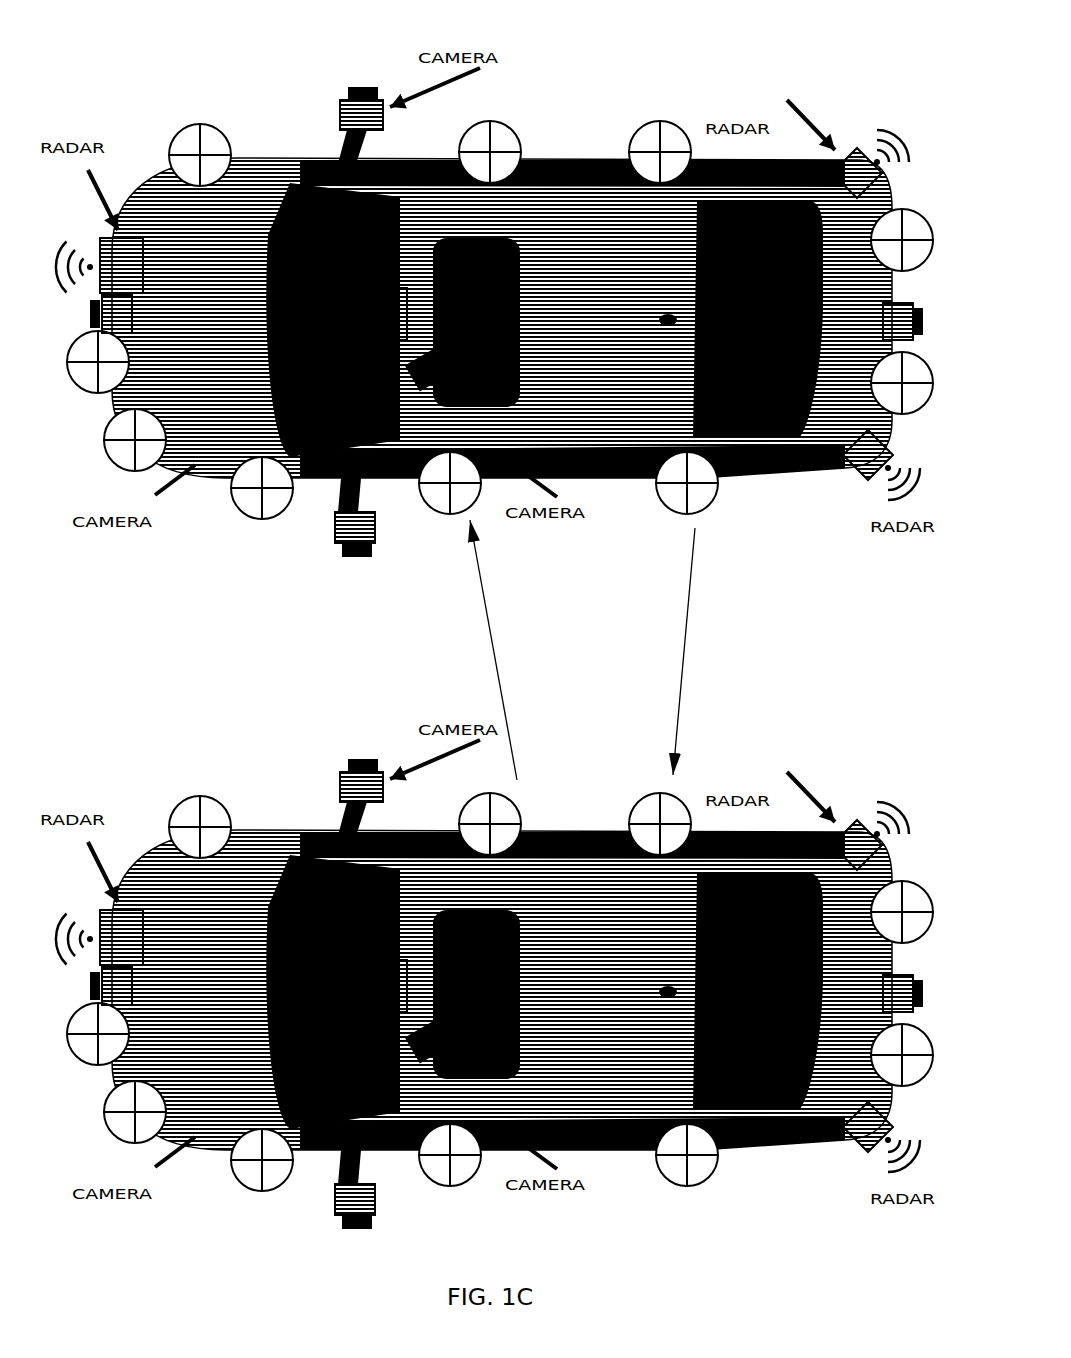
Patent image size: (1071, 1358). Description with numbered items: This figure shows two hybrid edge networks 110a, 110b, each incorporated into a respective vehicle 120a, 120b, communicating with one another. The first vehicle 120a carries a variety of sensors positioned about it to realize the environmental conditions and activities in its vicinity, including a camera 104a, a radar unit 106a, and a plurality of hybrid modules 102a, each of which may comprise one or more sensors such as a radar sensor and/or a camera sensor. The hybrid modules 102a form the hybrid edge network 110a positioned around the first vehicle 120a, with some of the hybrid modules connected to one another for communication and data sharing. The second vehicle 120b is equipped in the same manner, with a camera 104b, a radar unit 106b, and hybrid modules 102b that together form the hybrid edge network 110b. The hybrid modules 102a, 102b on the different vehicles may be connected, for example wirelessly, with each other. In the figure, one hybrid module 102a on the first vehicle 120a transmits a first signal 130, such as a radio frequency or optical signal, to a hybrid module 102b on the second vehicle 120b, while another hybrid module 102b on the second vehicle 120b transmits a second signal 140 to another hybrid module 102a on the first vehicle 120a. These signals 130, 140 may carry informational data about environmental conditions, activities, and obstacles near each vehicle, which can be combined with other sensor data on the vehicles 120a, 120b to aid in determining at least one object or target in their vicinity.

The hybrid module 102a is at (194, 128).
The camera 104a is at (418, 93).
The radar unit 106a is at (807, 142).
The hybrid edge network 110a is at (845, 87).
The first vehicle 120a is at (767, 493).
The hybrid module 102b is at (194, 800).
The camera 104b is at (418, 764).
The radar unit 106b is at (807, 815).
The hybrid edge network 110b is at (867, 752).
The second vehicle 120b is at (767, 1165).
The first signal 130 is at (706, 651).
The second signal 140 is at (508, 650).